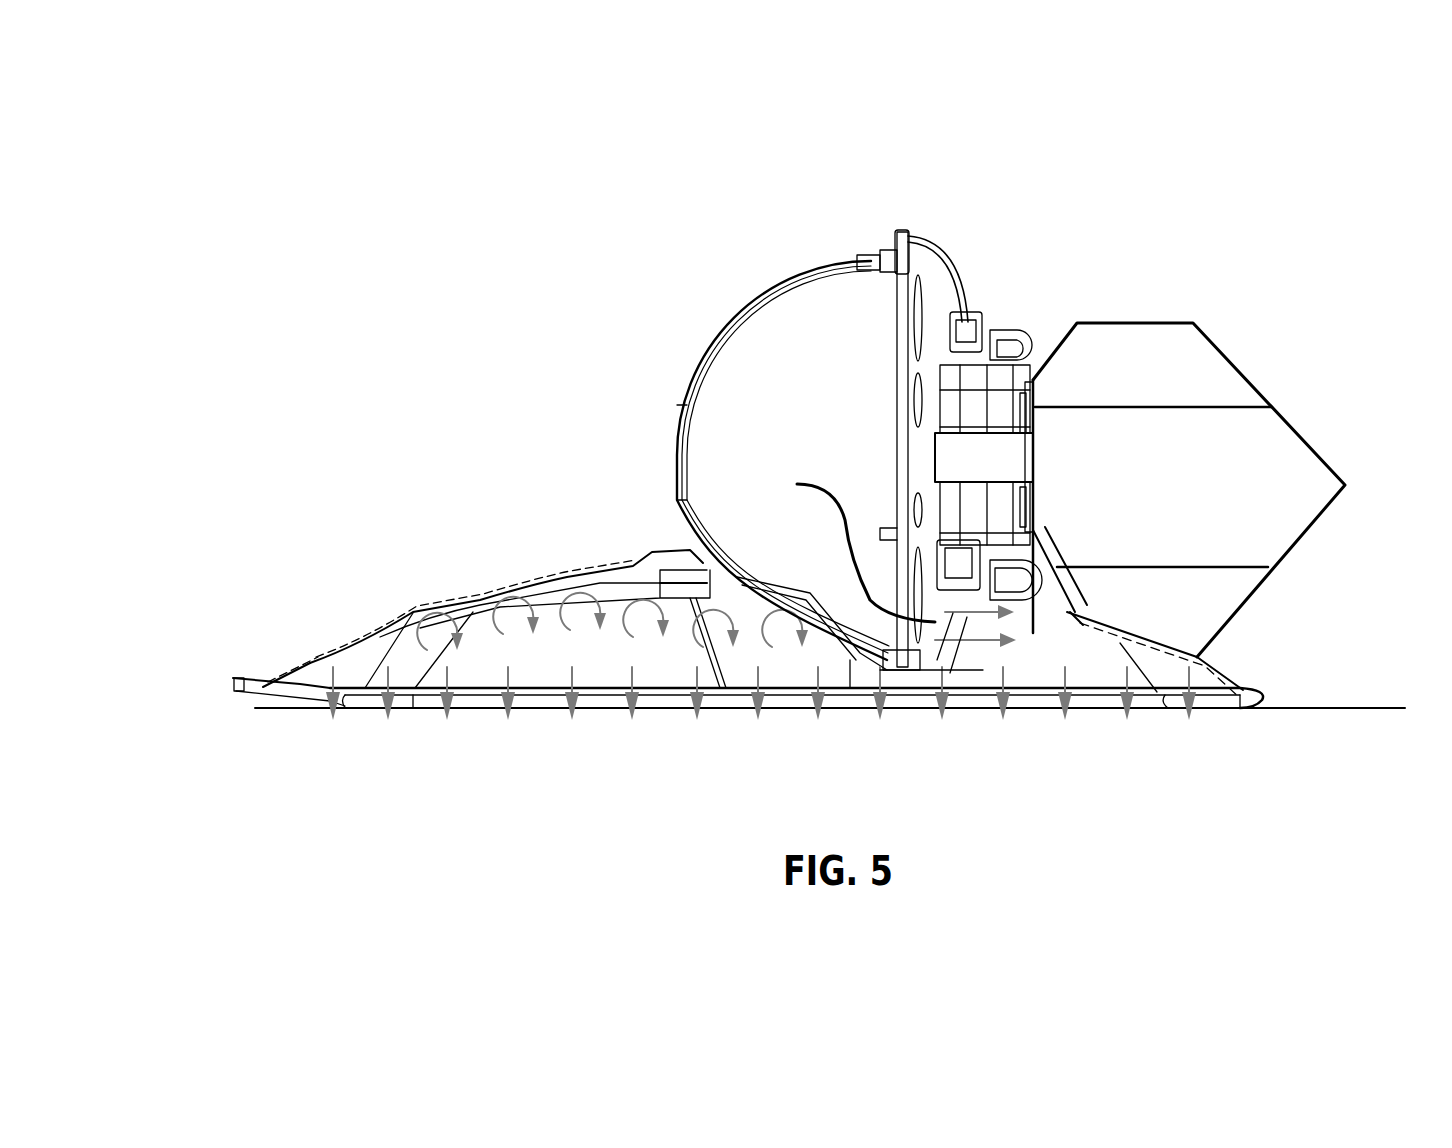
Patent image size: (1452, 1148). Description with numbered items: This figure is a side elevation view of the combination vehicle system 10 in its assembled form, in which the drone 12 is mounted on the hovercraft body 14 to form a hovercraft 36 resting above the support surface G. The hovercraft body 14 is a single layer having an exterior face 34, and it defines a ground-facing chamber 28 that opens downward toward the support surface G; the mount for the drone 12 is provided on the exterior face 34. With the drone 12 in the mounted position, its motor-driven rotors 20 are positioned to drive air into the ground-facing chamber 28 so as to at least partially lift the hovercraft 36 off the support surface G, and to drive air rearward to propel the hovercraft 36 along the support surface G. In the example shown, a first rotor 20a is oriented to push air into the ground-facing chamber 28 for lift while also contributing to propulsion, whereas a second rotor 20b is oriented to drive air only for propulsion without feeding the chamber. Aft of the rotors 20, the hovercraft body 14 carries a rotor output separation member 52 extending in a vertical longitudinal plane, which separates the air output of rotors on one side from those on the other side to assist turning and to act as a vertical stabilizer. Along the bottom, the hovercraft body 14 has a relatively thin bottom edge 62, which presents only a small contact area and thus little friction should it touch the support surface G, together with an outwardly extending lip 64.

The combination vehicle system 10 is at (771, 481).
The hovercraft 36 is at (593, 365).
The drone 12 is at (925, 236).
The hovercraft body 14 is at (317, 667).
The rotors 20 is at (895, 386).
The first rotor 20a is at (913, 520).
The second rotor 20b is at (920, 300).
The ground-facing chamber 28 is at (622, 667).
The exterior face 34 is at (529, 583).
The rotor output separation member 52 is at (1147, 332).
The bottom edge 62 is at (482, 710).
The outwardly extending lip 64 is at (248, 693).
The support surface G is at (1348, 707).